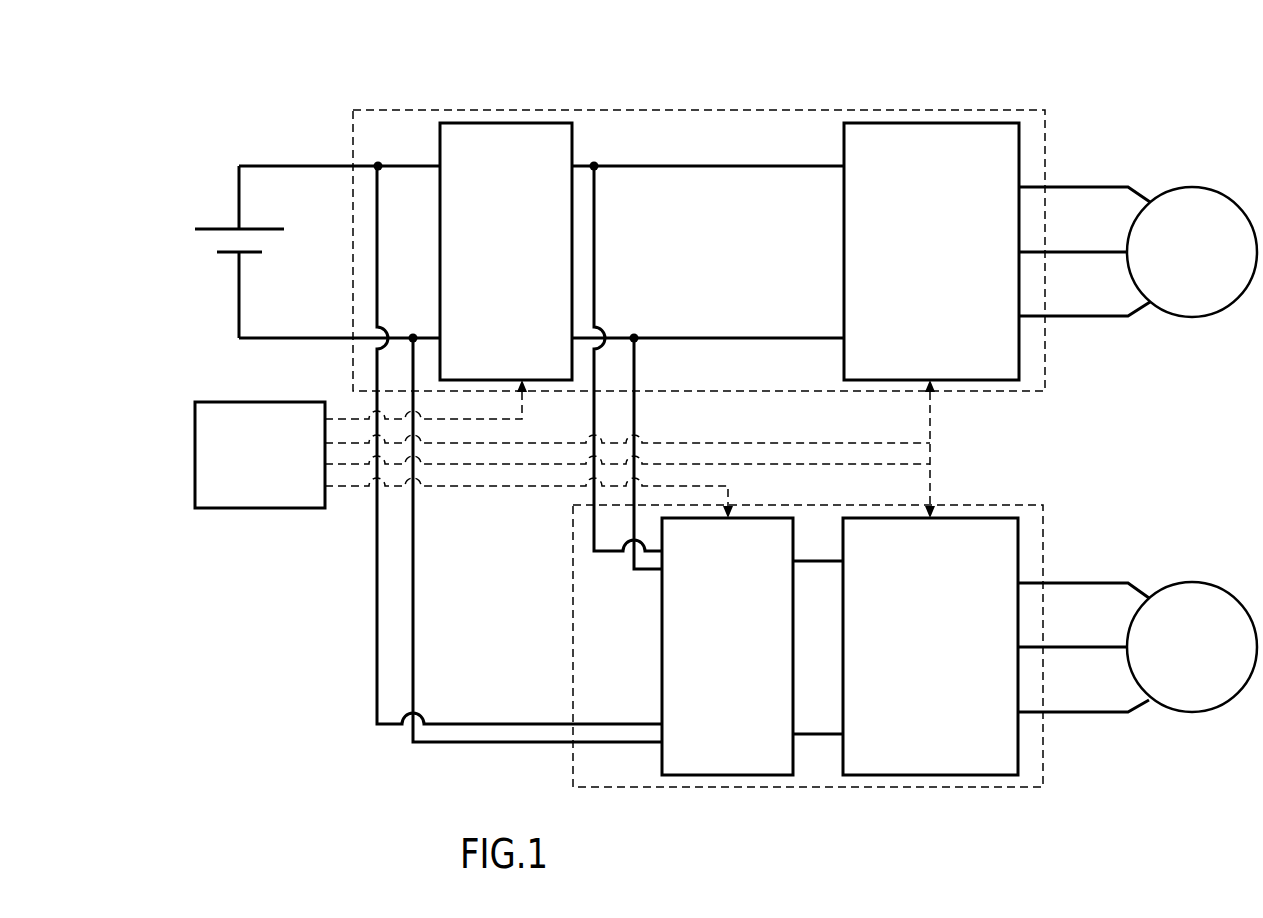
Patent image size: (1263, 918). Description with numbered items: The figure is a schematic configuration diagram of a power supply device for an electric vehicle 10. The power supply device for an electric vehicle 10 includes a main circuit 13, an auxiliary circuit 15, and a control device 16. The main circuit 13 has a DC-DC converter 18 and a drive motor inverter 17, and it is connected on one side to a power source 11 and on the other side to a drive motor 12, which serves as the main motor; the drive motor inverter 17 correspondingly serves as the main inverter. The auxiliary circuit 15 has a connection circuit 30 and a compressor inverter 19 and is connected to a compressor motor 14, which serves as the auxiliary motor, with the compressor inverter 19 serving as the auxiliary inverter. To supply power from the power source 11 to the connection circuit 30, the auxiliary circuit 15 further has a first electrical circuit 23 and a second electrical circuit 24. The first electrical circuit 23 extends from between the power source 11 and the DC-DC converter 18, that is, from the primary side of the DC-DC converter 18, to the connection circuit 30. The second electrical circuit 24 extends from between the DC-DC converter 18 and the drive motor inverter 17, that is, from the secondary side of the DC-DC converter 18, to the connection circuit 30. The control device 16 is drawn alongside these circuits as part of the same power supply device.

The power supply device for an electric vehicle 10 is at (353, 83).
The power source 11 is at (224, 229).
The drive motor 12 is at (1192, 187).
The main circuit 13 is at (632, 110).
The compressor motor 14 is at (1192, 582).
The auxiliary circuit 15 is at (761, 788).
The control device 16 is at (219, 402).
The drive motor inverter 17 is at (931, 123).
The DC-DC converter 18 is at (507, 122).
The compressor inverter 19 is at (1018, 757).
The first electrical circuit 23 is at (377, 655).
The second electrical circuit 24 is at (594, 532).
The connection circuit 30 is at (662, 757).